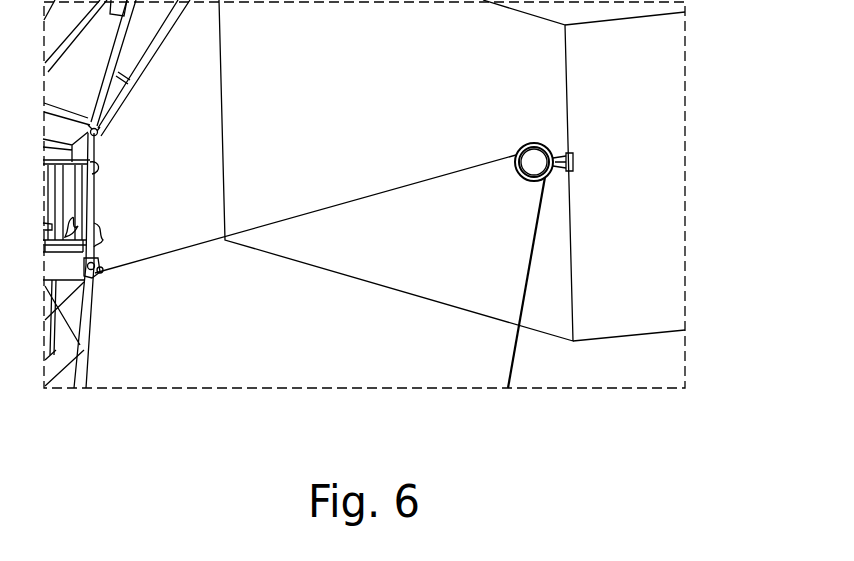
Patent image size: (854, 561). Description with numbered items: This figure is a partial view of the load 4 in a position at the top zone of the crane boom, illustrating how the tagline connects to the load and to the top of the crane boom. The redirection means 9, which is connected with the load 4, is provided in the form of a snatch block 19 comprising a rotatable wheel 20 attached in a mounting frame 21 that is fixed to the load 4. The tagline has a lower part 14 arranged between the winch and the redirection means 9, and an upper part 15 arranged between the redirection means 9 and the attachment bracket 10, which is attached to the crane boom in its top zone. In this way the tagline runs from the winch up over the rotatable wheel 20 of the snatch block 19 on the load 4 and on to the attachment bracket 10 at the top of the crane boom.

The load 4 is at (685, 75).
The redirection means 9 is at (556, 148).
The attachment bracket 10 is at (97, 278).
The lower part 14 is at (517, 360).
The upper part 15 is at (152, 257).
The snatch block 19 is at (523, 178).
The rotatable wheel 20 is at (520, 181).
The mounting frame 21 is at (575, 172).